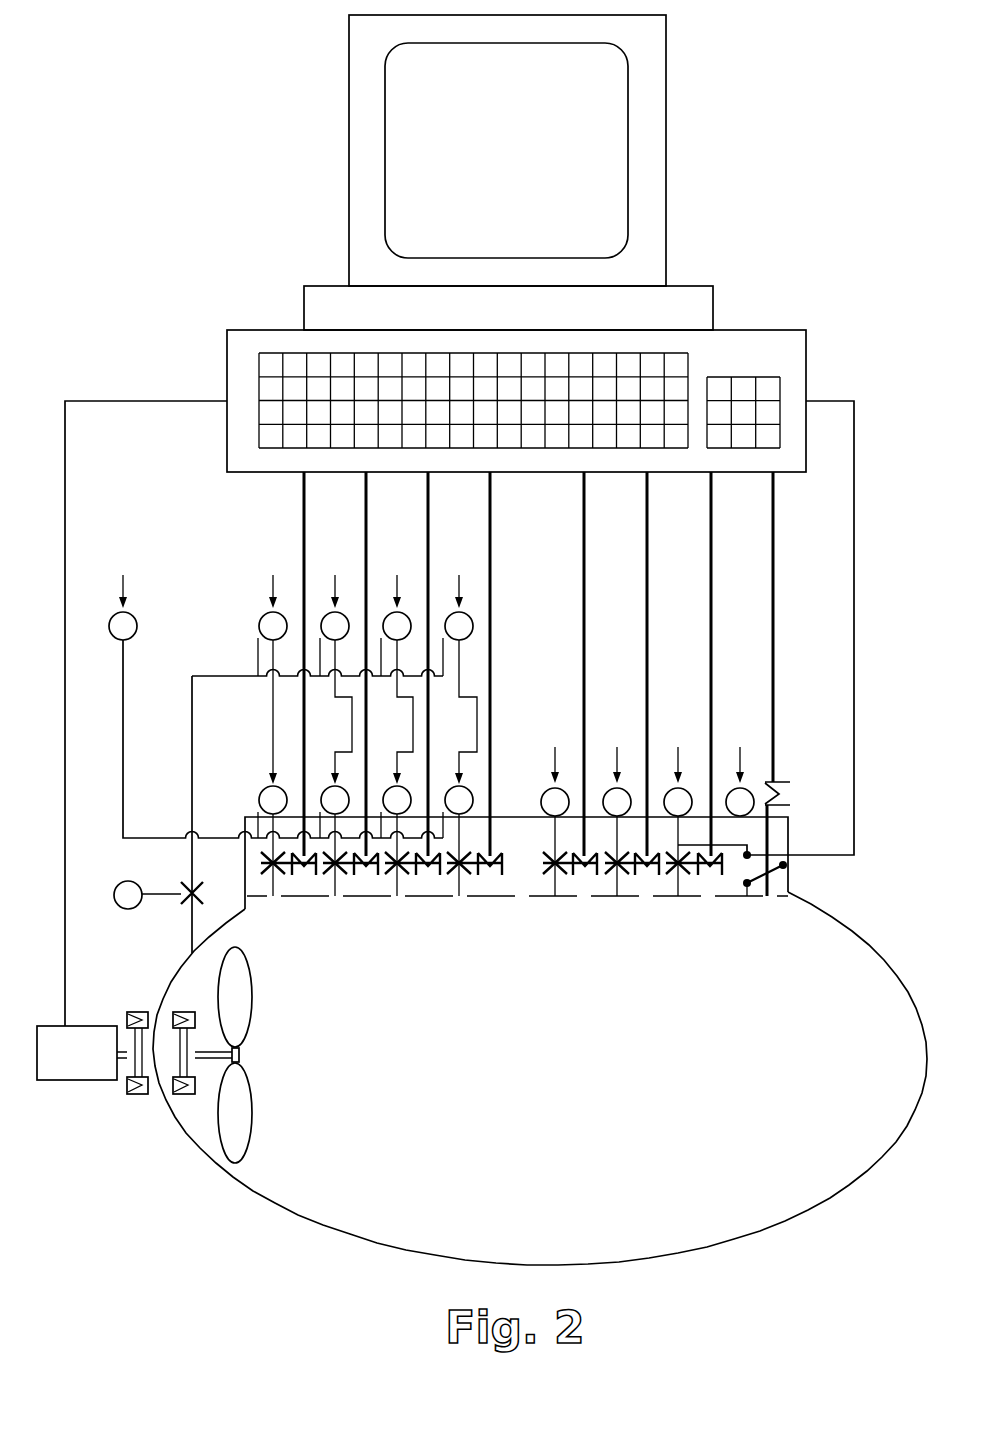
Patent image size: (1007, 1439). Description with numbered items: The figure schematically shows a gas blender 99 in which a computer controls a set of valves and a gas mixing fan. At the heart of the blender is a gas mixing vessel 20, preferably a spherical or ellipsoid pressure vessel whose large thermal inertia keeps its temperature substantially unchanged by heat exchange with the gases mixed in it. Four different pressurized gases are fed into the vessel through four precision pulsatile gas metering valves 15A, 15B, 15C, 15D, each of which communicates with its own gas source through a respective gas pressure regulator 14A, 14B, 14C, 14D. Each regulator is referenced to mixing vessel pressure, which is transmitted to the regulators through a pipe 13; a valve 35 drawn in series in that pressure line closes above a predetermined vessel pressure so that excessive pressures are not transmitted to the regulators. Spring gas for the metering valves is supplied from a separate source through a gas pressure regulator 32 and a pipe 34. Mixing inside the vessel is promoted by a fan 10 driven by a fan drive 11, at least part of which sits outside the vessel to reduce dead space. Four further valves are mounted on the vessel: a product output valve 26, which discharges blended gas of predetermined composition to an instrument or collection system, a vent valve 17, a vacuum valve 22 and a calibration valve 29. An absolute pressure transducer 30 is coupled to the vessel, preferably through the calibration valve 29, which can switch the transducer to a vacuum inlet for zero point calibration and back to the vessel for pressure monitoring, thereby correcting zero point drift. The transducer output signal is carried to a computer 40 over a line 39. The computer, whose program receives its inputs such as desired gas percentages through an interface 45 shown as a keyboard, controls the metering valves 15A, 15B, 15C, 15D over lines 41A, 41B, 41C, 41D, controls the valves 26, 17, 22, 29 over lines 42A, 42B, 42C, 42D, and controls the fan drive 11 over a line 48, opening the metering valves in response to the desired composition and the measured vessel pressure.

The computer 40 is at (716, 296).
The interface 45 is at (775, 355).
The line 48 is at (180, 398).
The line 39 is at (805, 853).
The line 41A is at (303, 526).
The line 41B is at (365, 526).
The line 41C is at (427, 526).
The line 41D is at (489, 526).
The line 42A is at (583, 542).
The line 42B is at (646, 543).
The line 42C is at (710, 543).
The line 42D is at (772, 543).
The gas pressure regulator 32 is at (137, 628).
The gas pressure regulator 14A is at (259, 628).
The gas pressure regulator 14B is at (343, 616).
The gas pressure regulator 14C is at (405, 616).
The gas pressure regulator 14D is at (467, 616).
The pipe 13 is at (192, 758).
The pipe 34 is at (123, 758).
The gas metering valve 15A is at (262, 790).
The gas metering valve 15B is at (324, 790).
The gas metering valve 15C is at (386, 790).
The gas metering valve 15D is at (451, 790).
The product output valve 26 is at (547, 790).
The vent valve 17 is at (608, 790).
The vacuum valve 22 is at (668, 790).
The calibration valve 29 is at (731, 790).
The pressure transducer 30 is at (760, 887).
The valve 35 is at (130, 910).
The gas mixing vessel 20 is at (392, 1250).
The fan drive 11 is at (90, 1104).
The fan 10 is at (242, 988).
The gas blender 99 is at (225, 1228).